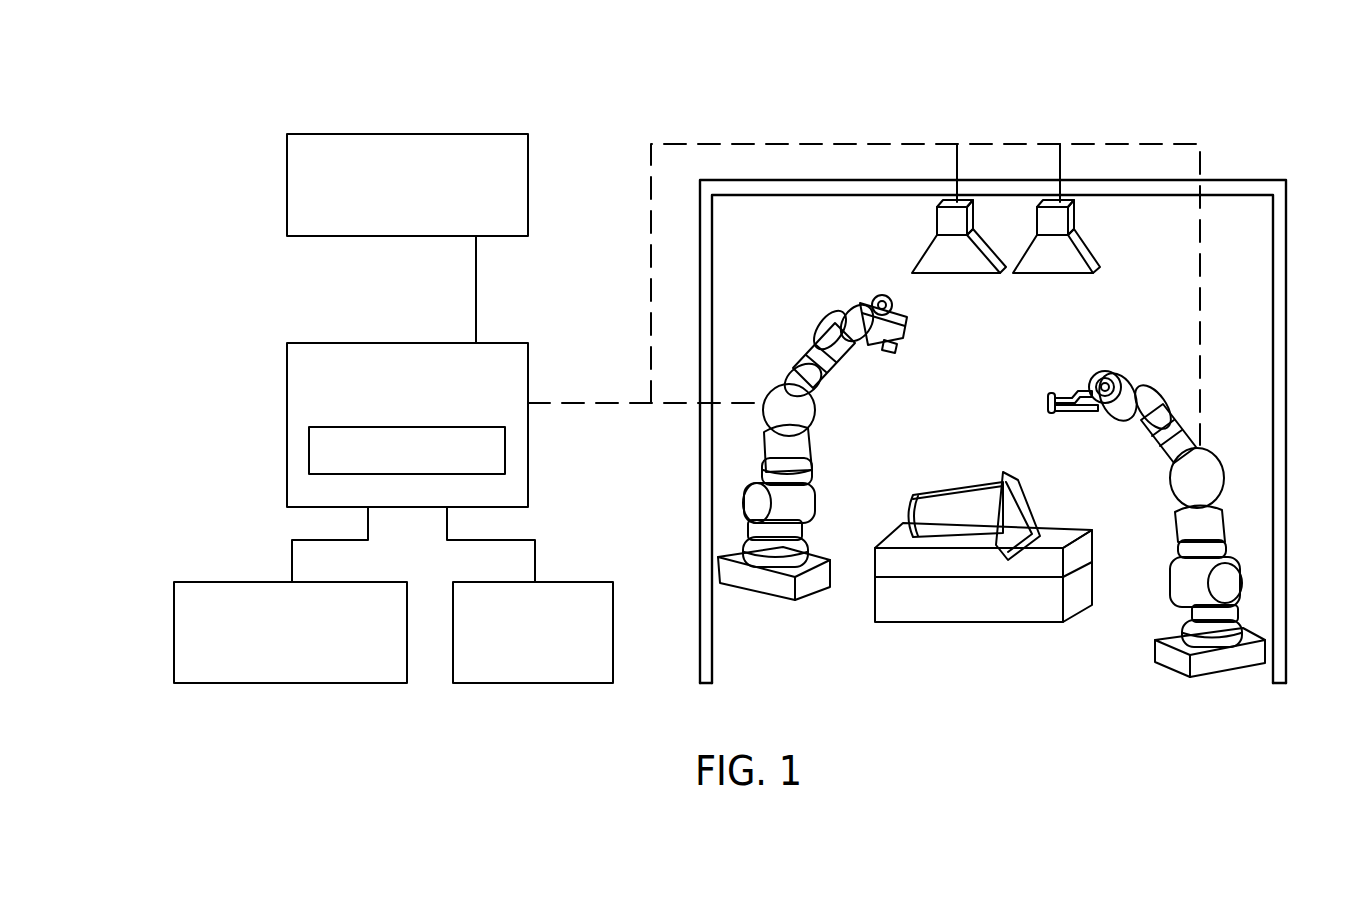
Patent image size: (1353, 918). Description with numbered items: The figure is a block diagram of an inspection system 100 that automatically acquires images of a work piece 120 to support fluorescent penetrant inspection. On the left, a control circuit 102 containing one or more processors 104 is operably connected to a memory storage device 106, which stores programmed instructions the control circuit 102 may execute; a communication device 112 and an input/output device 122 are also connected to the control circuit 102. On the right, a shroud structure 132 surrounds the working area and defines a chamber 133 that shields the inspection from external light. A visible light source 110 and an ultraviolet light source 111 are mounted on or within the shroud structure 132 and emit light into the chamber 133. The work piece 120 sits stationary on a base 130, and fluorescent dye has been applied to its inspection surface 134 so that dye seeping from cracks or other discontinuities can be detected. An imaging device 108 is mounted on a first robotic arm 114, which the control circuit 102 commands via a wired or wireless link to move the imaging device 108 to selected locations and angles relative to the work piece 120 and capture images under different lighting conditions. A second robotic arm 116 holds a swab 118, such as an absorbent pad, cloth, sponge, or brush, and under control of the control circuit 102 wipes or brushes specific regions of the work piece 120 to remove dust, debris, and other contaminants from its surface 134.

The inspection system 100 is at (590, 68).
The control circuit 102 is at (530, 360).
The processors 104 is at (507, 450).
The memory storage device 106 is at (530, 181).
The imaging device 108 is at (910, 327).
The visible light source 110 is at (933, 255).
The ultraviolet light source 111 is at (1090, 247).
The communication device 112 is at (172, 637).
The first robotic arm 114 is at (850, 433).
The second robotic arm 116 is at (1134, 505).
The swab 118 is at (1048, 397).
The work piece 120 is at (974, 493).
The input/output device 122 is at (614, 630).
The base 130 is at (1083, 553).
The shroud structure 132 is at (1245, 185).
The chamber 133 is at (1247, 242).
The inspection surface 134 is at (936, 510).